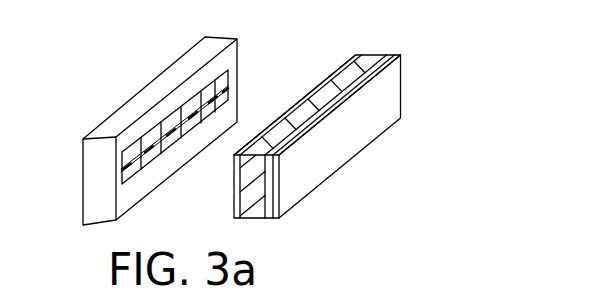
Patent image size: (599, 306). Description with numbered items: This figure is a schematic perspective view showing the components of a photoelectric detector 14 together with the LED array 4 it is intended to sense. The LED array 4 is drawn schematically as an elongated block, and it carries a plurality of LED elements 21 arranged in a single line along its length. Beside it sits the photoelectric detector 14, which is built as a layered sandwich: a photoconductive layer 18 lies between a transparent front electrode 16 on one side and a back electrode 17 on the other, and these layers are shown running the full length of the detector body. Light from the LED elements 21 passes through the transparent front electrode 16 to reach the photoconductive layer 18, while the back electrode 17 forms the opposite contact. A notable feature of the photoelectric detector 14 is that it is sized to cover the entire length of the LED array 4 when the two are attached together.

The LED array 4 is at (150, 96).
The LED elements 21 is at (223, 99).
The photoelectric detector 14 is at (356, 172).
The transparent front electrode 16 is at (346, 65).
The photoconductive layer 18 is at (371, 56).
The back electrode 17 is at (401, 55).